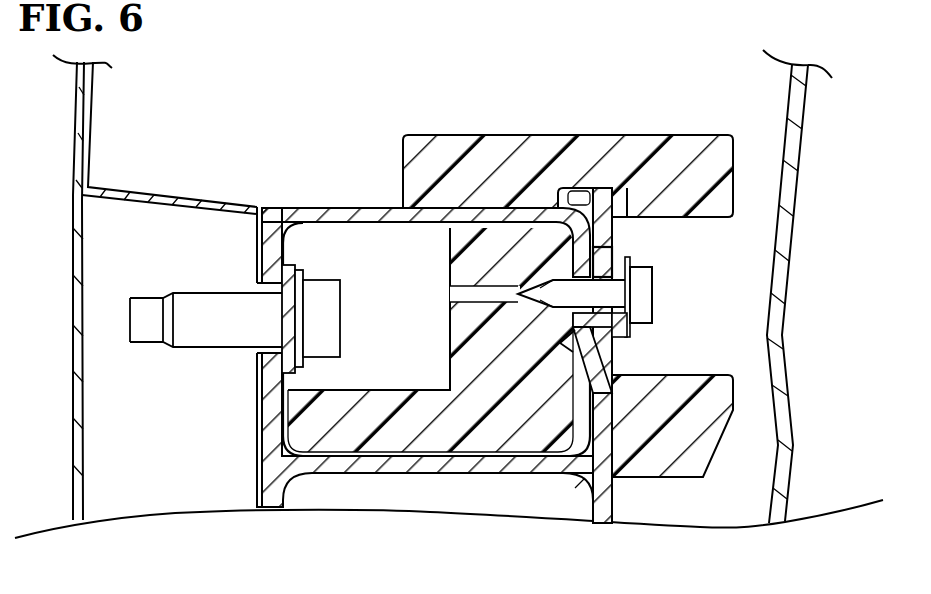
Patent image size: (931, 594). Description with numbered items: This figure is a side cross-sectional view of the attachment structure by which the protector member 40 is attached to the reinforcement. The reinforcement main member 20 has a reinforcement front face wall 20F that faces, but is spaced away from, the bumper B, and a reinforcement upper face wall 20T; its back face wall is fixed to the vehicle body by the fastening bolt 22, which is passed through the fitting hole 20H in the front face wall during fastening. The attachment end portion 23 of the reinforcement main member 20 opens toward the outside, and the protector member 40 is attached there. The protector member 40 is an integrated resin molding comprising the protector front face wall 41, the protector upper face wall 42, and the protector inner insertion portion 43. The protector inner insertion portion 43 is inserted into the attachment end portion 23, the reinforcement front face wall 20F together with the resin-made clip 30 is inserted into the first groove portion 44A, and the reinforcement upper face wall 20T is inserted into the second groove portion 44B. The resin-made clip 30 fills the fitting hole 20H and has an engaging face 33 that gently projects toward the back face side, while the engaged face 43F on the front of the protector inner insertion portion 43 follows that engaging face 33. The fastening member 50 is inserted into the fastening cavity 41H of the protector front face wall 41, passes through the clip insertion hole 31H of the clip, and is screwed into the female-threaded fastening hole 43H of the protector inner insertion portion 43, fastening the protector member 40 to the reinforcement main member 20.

The reinforcement main member 20 is at (352, 474).
The reinforcement upper face wall 20T is at (287, 208).
The fitting hole 20H is at (613, 254).
The reinforcement front face wall 20F is at (613, 499).
The fastening bolt 22 is at (342, 326).
The attachment end portion 23 is at (343, 224).
The resin-made clip 30 is at (627, 336).
The clip insertion hole 31H is at (612, 284).
The engaging face 33 is at (568, 327).
The protector member 40 is at (580, 146).
The protector front face wall 41 is at (733, 143).
The fastening cavity 41H is at (680, 374).
The protector upper face wall 42 is at (448, 134).
The protector inner insertion portion 43 is at (436, 339).
The fastening hole 43H is at (450, 292).
The engaged face 43F is at (567, 470).
The first groove portion 44A is at (583, 404).
The second groove portion 44B is at (436, 238).
The fastening member 50 is at (652, 312).
The bumper B is at (782, 279).